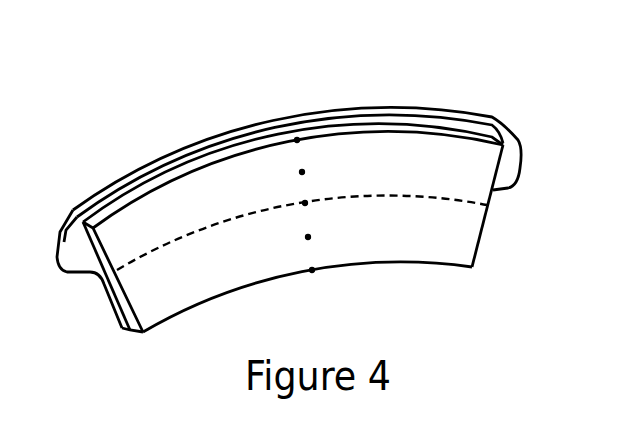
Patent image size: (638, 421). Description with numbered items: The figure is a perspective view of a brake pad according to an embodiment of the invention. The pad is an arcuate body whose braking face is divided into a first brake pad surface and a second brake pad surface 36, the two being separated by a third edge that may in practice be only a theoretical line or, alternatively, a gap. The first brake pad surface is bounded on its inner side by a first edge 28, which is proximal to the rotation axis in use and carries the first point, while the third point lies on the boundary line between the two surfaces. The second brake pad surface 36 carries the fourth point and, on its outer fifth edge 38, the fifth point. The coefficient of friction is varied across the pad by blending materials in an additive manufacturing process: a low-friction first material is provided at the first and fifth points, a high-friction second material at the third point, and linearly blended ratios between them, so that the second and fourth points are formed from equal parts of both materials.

The fifth edge 38 is at (435, 133).
The second brake pad surface 36 is at (452, 175).
The first edge 28 is at (413, 263).